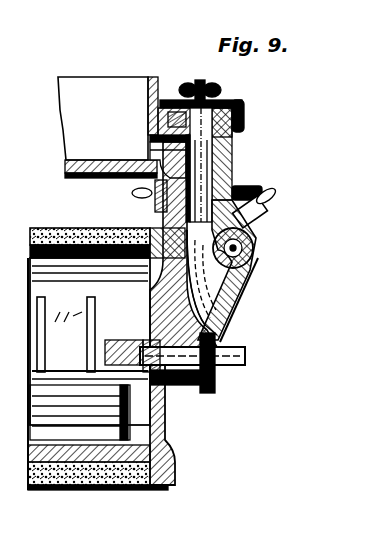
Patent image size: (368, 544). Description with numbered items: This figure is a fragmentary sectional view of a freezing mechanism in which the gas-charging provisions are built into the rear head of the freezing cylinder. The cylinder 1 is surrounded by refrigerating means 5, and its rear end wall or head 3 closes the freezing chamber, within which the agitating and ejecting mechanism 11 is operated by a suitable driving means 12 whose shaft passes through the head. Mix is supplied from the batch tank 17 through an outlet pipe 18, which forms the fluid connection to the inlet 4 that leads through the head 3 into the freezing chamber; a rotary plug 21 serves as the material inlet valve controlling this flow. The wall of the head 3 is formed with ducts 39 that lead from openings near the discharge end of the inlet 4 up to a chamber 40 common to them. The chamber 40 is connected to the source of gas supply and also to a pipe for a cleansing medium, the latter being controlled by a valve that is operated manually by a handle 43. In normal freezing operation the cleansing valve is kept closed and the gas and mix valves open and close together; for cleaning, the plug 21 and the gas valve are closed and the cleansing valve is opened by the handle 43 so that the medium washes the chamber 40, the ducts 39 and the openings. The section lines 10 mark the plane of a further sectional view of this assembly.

The section line 10 is at (179, 287).
The batch tank 17 is at (103, 87).
The outlet pipe 18 is at (150, 148).
The plug 21 is at (226, 130).
The handle 43 is at (257, 217).
The chamber 40 is at (254, 258).
The ducts 39 is at (243, 287).
The inlet 4 is at (217, 320).
The driving means 12 is at (243, 356).
The rear end wall or head 3 is at (164, 416).
The cylinder 1 is at (33, 270).
The agitating and ejecting mechanism 11 is at (86, 310).
The refrigerating means 5 is at (55, 494).